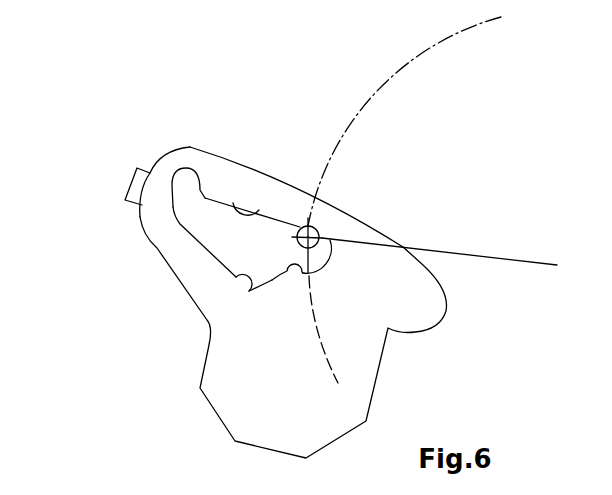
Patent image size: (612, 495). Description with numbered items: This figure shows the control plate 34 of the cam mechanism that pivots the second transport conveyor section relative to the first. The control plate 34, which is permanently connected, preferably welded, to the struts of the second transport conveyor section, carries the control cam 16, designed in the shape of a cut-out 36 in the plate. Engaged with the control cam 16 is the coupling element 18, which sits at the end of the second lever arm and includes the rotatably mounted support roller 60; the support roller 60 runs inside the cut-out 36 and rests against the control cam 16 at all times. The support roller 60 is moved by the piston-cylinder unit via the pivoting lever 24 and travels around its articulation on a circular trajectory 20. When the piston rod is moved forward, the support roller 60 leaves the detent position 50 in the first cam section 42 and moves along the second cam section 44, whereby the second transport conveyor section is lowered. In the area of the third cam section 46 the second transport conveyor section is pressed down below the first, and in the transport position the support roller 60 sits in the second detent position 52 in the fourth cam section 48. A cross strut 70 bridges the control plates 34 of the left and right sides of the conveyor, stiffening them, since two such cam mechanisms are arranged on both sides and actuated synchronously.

The control cam 16 is at (218, 221).
The coupling element 18 is at (336, 218).
The circular trajectory 20 is at (327, 162).
The pivoting lever 24 is at (487, 253).
The control plate 34 is at (267, 406).
The cut-out 36 is at (264, 248).
The first cam section 42 is at (197, 182).
The second cam section 44 is at (260, 207).
The third cam section 46 is at (289, 272).
The fourth cam section 48 is at (233, 276).
The detent position 50 is at (159, 151).
The second detent position 52 is at (223, 301).
The support roller 60 is at (334, 256).
The cross strut 70 is at (132, 176).